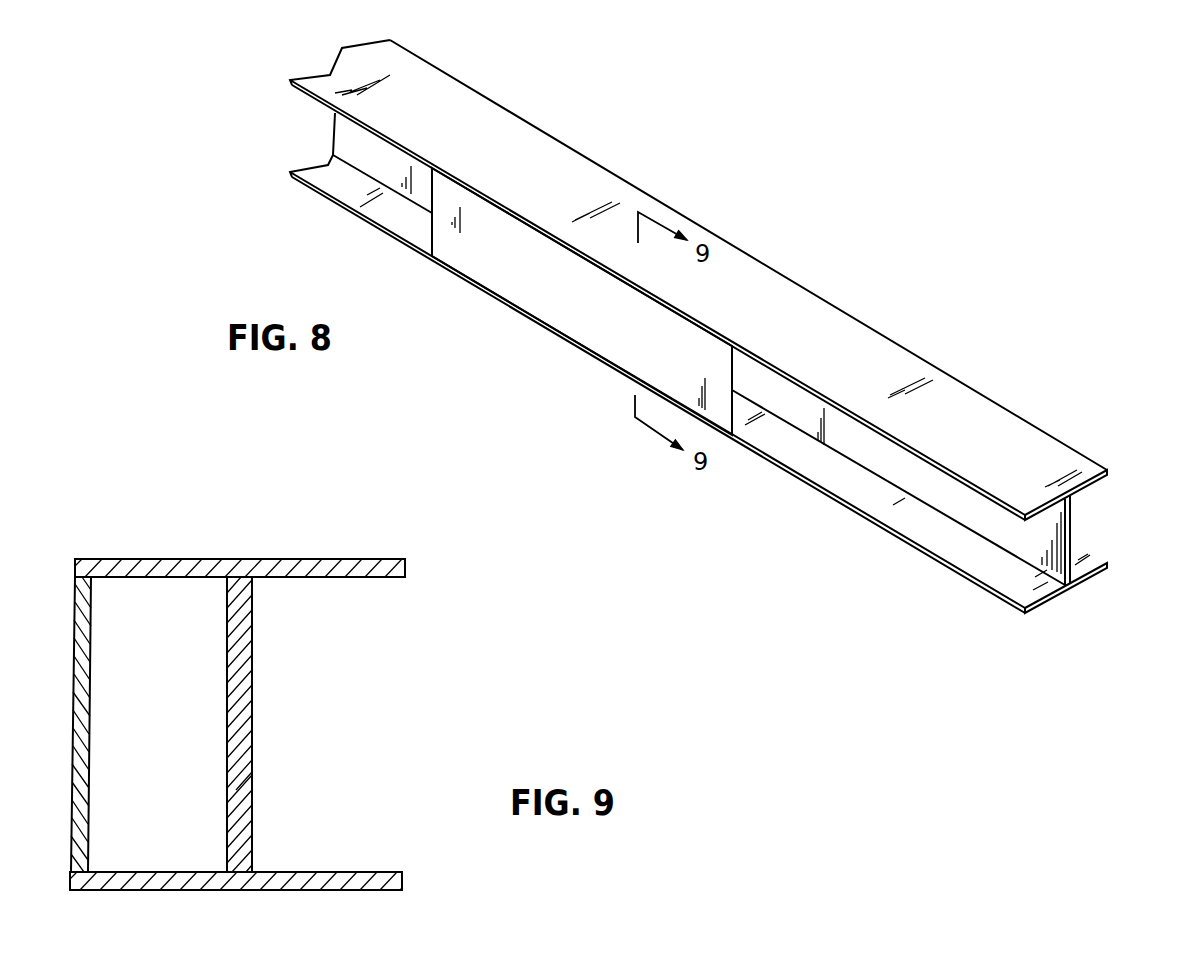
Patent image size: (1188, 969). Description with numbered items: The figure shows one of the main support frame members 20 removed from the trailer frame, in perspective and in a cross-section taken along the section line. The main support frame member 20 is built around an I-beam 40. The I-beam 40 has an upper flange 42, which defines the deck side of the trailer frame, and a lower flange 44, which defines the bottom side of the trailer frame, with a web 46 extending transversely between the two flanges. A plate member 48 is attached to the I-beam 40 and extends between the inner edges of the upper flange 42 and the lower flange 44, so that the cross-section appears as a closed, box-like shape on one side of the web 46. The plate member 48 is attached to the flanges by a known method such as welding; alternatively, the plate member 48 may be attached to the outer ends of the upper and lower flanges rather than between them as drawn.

In FIG. 8, the main support frame member 20 is at (727, 345).
In FIG. 9, the main support frame member 20 is at (212, 720).
In FIG. 8, the upper flange 42 is at (1078, 465).
In FIG. 9, the upper flange 42 is at (343, 563).
In FIG. 8, the lower flange 44 is at (993, 568).
In FIG. 9, the lower flange 44 is at (299, 880).
In FIG. 8, the I-beam 40 is at (1070, 515).
In FIG. 9, the I-beam 40 is at (252, 632).
In FIG. 8, the web 46 is at (1022, 533).
In FIG. 9, the web 46 is at (237, 780).
In FIG. 8, the plate member 48 is at (590, 322).
In FIG. 9, the plate member 48 is at (80, 752).